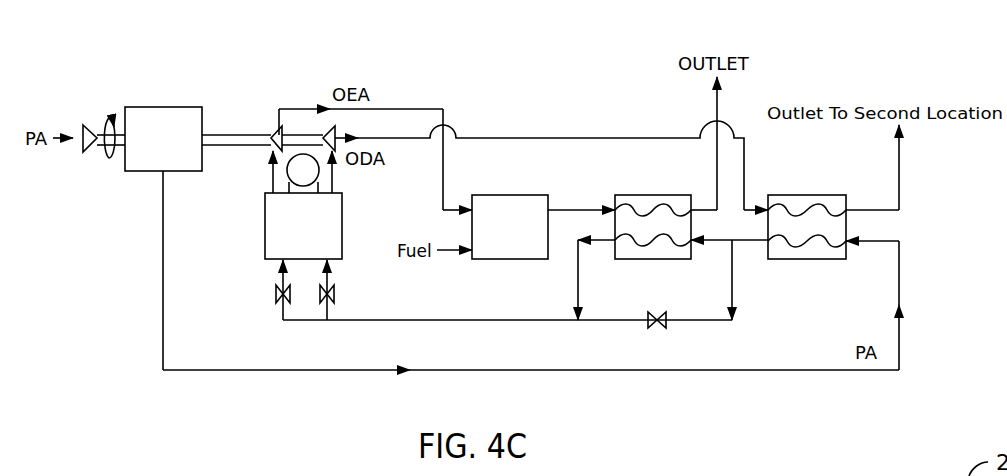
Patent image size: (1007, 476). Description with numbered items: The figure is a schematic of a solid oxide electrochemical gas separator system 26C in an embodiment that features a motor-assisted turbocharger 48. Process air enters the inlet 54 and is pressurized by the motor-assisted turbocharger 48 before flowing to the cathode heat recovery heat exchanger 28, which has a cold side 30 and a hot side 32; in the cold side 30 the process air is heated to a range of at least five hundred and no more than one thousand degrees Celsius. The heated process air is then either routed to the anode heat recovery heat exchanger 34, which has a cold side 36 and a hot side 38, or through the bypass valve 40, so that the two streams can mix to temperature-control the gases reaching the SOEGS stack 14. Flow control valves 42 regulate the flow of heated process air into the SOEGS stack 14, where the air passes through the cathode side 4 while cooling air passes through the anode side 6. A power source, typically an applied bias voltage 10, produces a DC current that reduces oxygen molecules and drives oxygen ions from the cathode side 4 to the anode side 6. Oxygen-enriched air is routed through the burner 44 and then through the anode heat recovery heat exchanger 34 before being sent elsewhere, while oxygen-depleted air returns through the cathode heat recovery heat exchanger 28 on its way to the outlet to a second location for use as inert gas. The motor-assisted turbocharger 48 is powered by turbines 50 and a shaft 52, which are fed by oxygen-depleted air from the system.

The cathode side 4 is at (301, 206).
The anode side 6 is at (265, 192).
The applied bias voltage 10 is at (305, 153).
The SOEGS stack 14 is at (265, 225).
The SOEGS system 26C is at (858, 76).
The cathode heat recovery heat exchanger 28 is at (807, 228).
The cold side 30 is at (819, 234).
The hot side 32 is at (812, 195).
The anode heat recovery heat exchanger 34 is at (652, 221).
The cold side 36 is at (665, 259).
The hot side 38 is at (652, 195).
The bypass valve 40 is at (657, 328).
The flow control valves 42 is at (322, 292).
The burner 44 is at (522, 239).
The motor-assisted turbocharger 48 is at (175, 151).
The turbines 50 is at (275, 133).
The shaft 52 is at (237, 132).
The inlet 54 is at (95, 145).